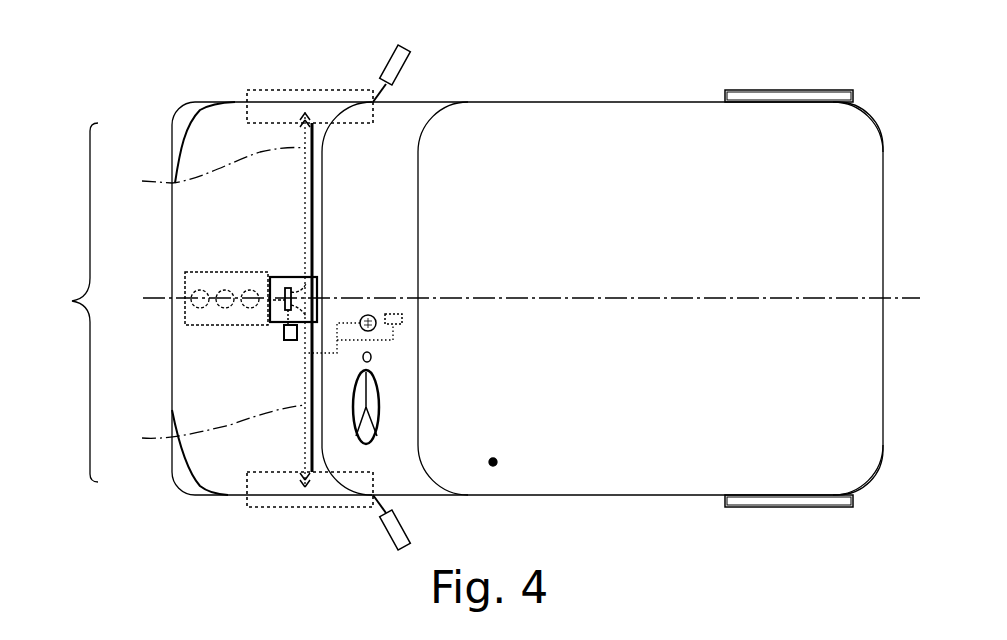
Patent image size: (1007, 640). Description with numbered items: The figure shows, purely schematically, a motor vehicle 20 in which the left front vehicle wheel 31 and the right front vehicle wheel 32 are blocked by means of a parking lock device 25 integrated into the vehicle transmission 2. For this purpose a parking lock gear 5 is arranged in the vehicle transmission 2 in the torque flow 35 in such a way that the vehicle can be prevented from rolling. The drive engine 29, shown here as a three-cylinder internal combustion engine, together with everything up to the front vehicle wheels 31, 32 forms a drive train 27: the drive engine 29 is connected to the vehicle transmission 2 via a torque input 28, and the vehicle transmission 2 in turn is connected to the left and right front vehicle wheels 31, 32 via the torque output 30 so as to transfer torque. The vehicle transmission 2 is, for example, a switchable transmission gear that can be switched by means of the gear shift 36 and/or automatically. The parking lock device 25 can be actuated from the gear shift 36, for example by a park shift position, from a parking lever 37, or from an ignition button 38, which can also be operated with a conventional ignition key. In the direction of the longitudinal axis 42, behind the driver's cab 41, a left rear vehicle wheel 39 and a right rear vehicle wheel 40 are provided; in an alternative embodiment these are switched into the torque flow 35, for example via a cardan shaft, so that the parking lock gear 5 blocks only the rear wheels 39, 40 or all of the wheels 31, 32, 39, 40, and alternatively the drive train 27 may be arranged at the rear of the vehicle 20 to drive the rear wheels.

The vehicle 20 is at (845, 52).
The longitudinal axis 42 is at (645, 297).
The drive train 27 is at (65, 302).
The right front vehicle wheel 32 is at (247, 117).
The left front vehicle wheel 31 is at (243, 491).
The torque flow 35 is at (206, 297).
The torque output 30 is at (305, 272).
The vehicle transmission 2 is at (287, 272).
The parking lock gear 5 is at (282, 280).
The drive engine 29 is at (185, 312).
The torque input 28 is at (270, 310).
The parking lock device 25 is at (278, 346).
The gear shift 36 is at (368, 315).
The parking lever 37 is at (393, 313).
The ignition button 38 is at (371, 360).
The driver's cab 41 is at (494, 466).
The right rear vehicle wheel 40 is at (760, 89).
The left rear vehicle wheel 39 is at (790, 508).